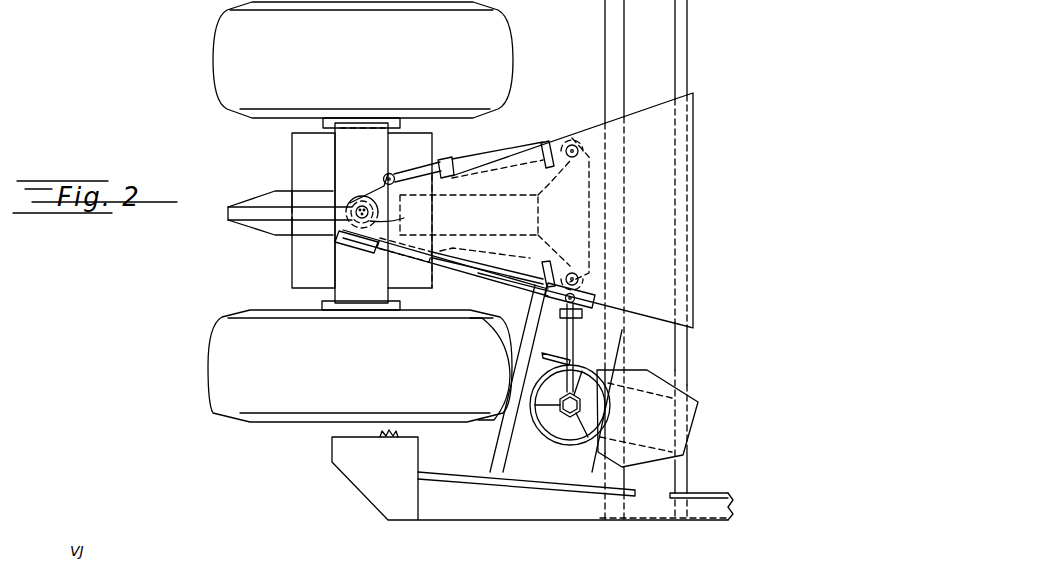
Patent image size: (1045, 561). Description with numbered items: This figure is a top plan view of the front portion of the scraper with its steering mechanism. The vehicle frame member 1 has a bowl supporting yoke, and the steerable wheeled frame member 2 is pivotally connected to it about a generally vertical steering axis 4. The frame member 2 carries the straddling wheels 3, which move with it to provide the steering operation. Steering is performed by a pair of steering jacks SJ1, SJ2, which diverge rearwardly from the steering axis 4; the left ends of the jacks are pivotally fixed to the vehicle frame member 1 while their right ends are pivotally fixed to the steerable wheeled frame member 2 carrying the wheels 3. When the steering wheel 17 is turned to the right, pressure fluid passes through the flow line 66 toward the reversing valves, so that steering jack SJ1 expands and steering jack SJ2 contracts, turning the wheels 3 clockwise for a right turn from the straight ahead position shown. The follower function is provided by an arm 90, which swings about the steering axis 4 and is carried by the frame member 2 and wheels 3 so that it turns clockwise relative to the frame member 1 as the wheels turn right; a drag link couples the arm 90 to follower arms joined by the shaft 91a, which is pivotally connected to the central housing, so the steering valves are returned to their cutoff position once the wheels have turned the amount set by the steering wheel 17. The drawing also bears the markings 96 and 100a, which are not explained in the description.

The straddling wheels 3 is at (356, 37).
The steering axis 4 is at (356, 208).
The vehicle frame member 1 is at (382, 186).
The steerable wheeled frame member 2 is at (552, 187).
The arm 90 is at (380, 219).
The steering jack SJ1 is at (483, 160).
The steering jack SJ2 is at (522, 263).
The flow line 66 is at (488, 278).
The shaft 91a is at (566, 346).
The steering wheel 96 is at (545, 428).
The steering wheel 17 is at (612, 372).
The frame member 100a is at (476, 494).